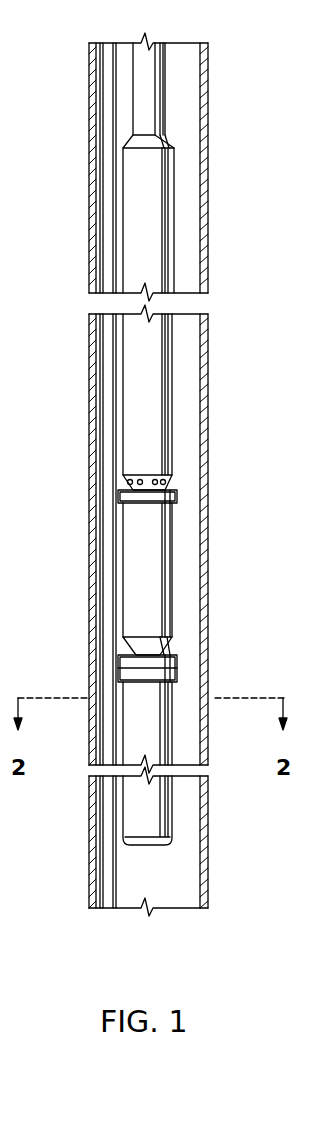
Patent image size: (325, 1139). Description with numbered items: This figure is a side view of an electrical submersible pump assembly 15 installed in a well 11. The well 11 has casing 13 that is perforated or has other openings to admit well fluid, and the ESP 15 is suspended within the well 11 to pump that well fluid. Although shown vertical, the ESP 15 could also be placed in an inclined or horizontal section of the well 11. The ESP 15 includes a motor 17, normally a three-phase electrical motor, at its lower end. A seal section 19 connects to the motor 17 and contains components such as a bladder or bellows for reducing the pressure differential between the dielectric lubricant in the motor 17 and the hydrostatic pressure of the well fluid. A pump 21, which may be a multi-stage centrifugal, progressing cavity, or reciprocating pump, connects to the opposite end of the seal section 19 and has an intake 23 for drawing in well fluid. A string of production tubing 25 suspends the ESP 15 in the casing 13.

The well 11 is at (163, 885).
The casing 13 is at (210, 842).
The electrical submersible pump assembly 15 is at (173, 273).
The motor 17 is at (148, 717).
The seal section 19 is at (147, 532).
The pump 21 is at (148, 340).
The intake 23 is at (170, 485).
The string of production tubing 25 is at (143, 97).